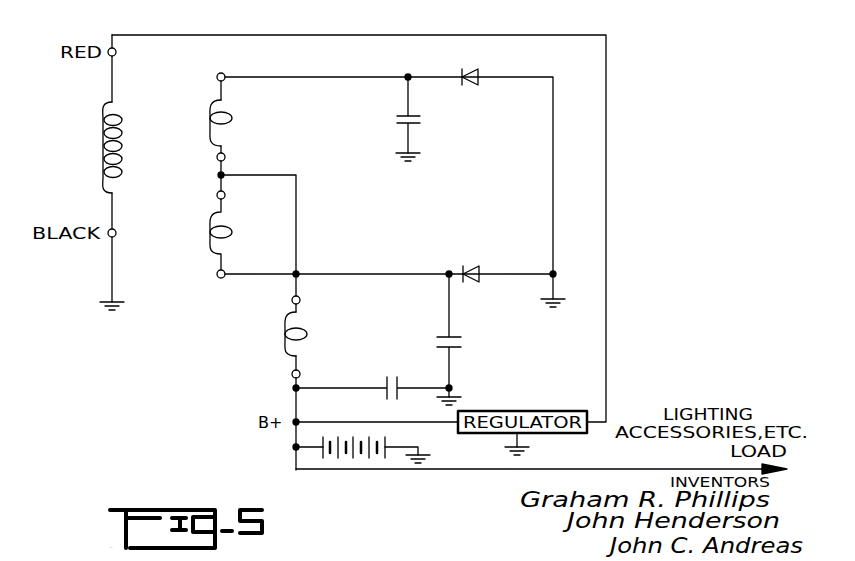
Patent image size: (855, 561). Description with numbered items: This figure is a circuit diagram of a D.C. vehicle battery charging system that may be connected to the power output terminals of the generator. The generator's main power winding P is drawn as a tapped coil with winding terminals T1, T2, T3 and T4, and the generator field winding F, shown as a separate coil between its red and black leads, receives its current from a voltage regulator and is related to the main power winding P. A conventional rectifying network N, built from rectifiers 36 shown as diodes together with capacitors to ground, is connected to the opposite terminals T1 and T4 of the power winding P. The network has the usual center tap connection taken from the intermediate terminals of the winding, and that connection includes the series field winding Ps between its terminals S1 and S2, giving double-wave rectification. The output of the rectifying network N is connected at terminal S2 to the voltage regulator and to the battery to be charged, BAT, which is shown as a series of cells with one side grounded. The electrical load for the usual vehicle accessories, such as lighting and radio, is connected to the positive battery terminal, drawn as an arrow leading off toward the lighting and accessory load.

The rectifiers 36 is at (467, 86).
The generator field winding F is at (95, 133).
The main power winding P is at (204, 167).
The series field winding Ps is at (318, 332).
The winding terminal T1 is at (220, 68).
The winding terminal T2 is at (230, 160).
The winding terminal T3 is at (230, 198).
The winding terminal T4 is at (220, 286).
The winding terminal S1 is at (306, 301).
The winding terminal S2 is at (306, 376).
The rectifying network N is at (494, 169).
The battery BAT is at (360, 455).